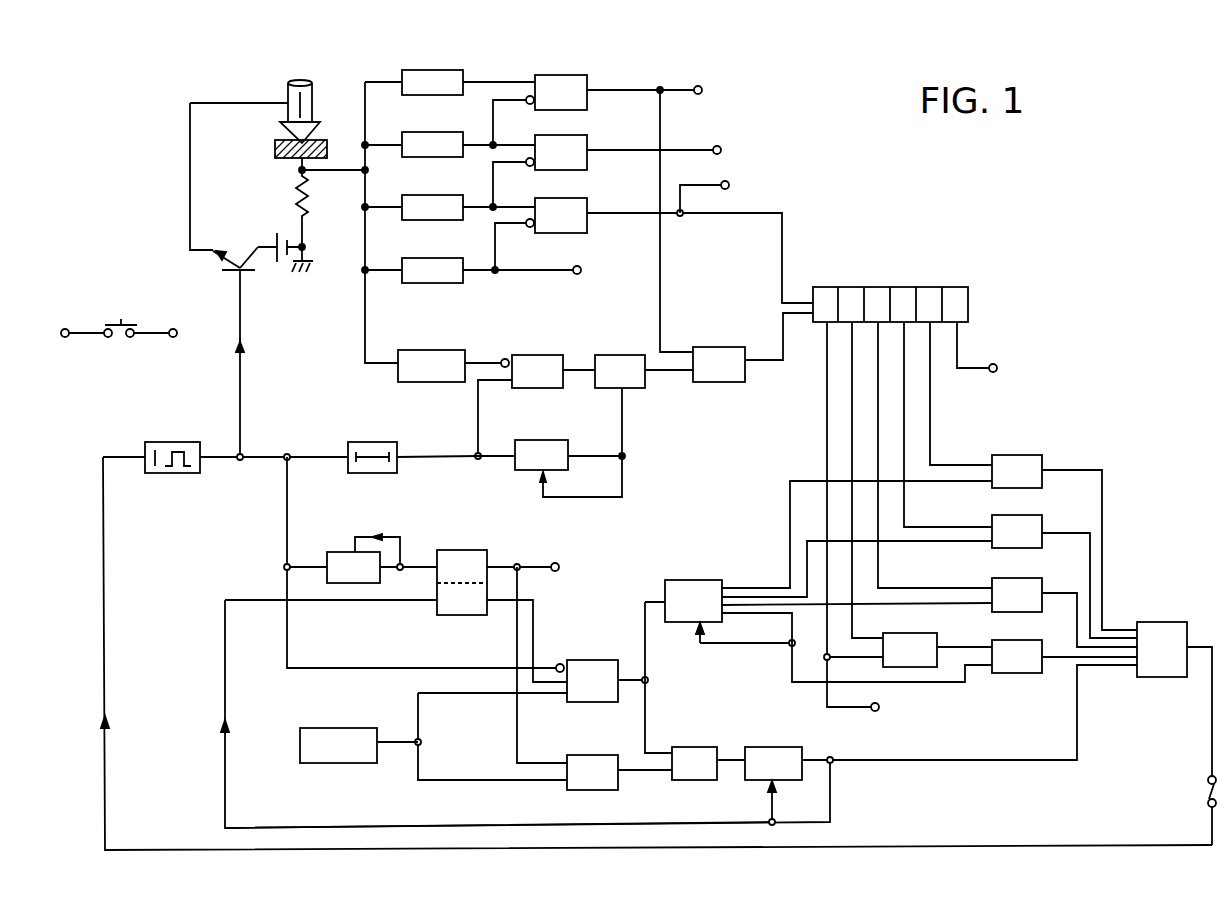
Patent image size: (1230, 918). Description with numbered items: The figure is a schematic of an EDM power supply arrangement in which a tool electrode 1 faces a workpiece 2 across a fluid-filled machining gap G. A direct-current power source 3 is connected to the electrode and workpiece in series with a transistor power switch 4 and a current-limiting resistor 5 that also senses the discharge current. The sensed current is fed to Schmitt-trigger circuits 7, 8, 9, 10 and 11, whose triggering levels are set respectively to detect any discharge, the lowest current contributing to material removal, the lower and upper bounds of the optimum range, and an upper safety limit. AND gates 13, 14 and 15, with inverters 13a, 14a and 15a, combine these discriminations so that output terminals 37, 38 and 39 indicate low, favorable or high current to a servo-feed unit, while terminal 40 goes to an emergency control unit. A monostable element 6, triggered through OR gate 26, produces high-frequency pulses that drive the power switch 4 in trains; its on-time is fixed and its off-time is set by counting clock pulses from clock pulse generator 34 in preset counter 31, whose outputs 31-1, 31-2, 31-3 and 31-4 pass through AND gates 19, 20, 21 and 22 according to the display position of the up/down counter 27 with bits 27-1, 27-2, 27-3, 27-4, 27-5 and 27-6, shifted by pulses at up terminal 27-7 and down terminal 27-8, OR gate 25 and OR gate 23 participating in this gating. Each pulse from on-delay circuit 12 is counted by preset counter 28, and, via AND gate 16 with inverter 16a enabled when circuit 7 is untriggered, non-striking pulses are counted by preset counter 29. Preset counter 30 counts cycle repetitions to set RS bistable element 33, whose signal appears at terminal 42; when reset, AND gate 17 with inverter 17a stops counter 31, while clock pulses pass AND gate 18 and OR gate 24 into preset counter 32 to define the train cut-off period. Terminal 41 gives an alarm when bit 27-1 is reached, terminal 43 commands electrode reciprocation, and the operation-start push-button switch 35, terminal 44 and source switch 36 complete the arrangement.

The tool electrode 1 is at (275, 150).
The workpiece 2 is at (316, 125).
The machining gap G is at (292, 137).
The direct-current power source 3 is at (281, 268).
The power switch 4 is at (239, 250).
The current-limiting resistor 5 is at (300, 196).
The monostable element 6 is at (172, 442).
The Schmitt-trigger circuit 7 is at (420, 350).
The Schmitt-trigger circuit 8 is at (410, 95).
The Schmitt circuit 9 is at (410, 157).
The Schmitt circuit 10 is at (410, 220).
The Schmitt circuit 11 is at (408, 283).
The on-delay circuit 12 is at (360, 442).
The AND gate 13 is at (590, 100).
The inverter 13a is at (529, 104).
The AND gate 14 is at (590, 160).
The inverter 14a is at (529, 166).
The AND gate 15 is at (590, 222).
The inverter 15a is at (529, 227).
The AND gate 16 is at (540, 355).
The inverter 16a is at (505, 359).
The AND gate 17 is at (600, 660).
The inverter 17a is at (560, 663).
The AND gate 18 is at (590, 755).
The AND gate 19 is at (1042, 463).
The AND gate 20 is at (1042, 523).
The AND gate 21 is at (1042, 586).
The AND gate 22 is at (1042, 648).
The OR gate 23 is at (702, 347).
The OR gate 24 is at (690, 747).
The OR gate 25 is at (938, 640).
The OR gate 26 is at (1175, 622).
The up/down counter 27 is at (977, 317).
The lowest-level bit 27-1 is at (968, 292).
The display bit 27-2 is at (928, 287).
The display bit 27-3 is at (905, 287).
The display bit 27-4 is at (880, 287).
The display bit 27-5 is at (847, 287).
The display bit 27-6 is at (818, 287).
The up terminal 27-7 is at (813, 303).
The down terminal 27-8 is at (813, 311).
The preset counter 28 is at (515, 465).
The preset counter 29 is at (647, 386).
The preset counter 30 is at (330, 552).
The preset counter 31 is at (685, 580).
The output terminal 31-1 is at (724, 586).
The output terminal 31-2 is at (724, 597).
The output terminal 31-3 is at (724, 608).
The output terminal 31-4 is at (724, 615).
The preset counter 32 is at (775, 747).
The RS bistable element 33 is at (480, 555).
The clock pulse generator 34 is at (348, 765).
The operation-start push-button switch 35 is at (120, 340).
The source switch 36 is at (1205, 790).
The output terminal 37 is at (703, 93).
The output terminal 38 is at (721, 151).
The output terminal 39 is at (730, 187).
The output terminal 40 is at (582, 270).
The output terminal 41 is at (998, 369).
The output terminal 42 is at (560, 565).
The output terminal 43 is at (879, 711).
The output terminal 44 is at (177, 331).